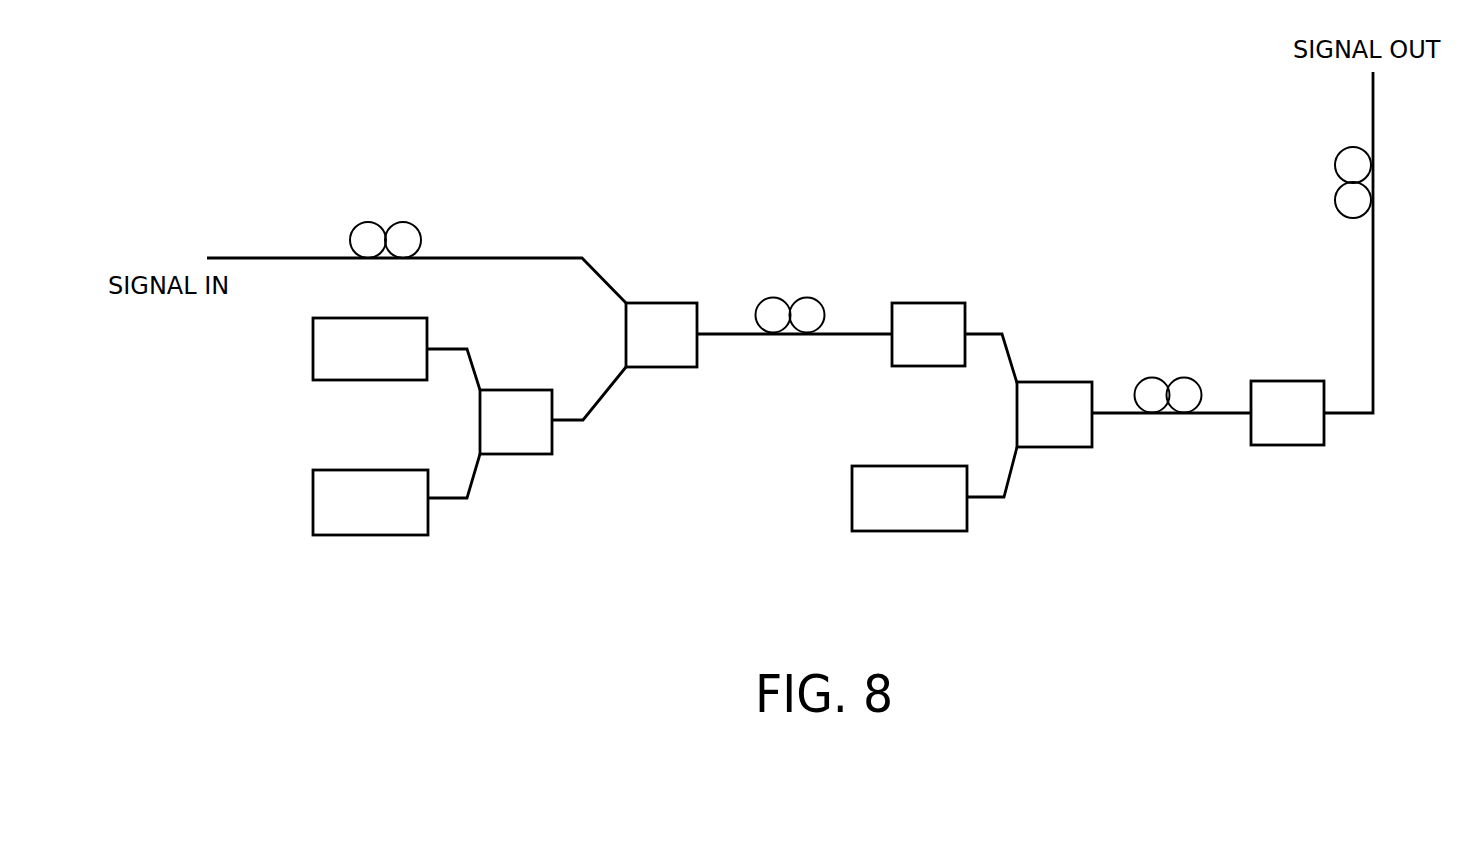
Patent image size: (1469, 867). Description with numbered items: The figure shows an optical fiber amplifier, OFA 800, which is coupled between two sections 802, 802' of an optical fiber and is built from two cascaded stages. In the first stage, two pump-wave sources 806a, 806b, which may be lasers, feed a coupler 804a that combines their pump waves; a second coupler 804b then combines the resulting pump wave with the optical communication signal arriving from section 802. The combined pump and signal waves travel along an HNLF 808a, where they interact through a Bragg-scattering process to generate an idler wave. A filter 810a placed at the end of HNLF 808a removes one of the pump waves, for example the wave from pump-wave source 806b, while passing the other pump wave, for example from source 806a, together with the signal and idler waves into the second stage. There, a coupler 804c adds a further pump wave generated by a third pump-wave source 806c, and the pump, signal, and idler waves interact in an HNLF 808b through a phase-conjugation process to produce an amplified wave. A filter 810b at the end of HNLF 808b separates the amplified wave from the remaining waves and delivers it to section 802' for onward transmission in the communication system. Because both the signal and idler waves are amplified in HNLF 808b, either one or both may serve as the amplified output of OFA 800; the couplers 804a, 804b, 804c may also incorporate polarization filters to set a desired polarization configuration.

The OFA 800 is at (940, 565).
The section of optical fiber 802 is at (416, 247).
The section of optical fiber 802' is at (1396, 242).
The coupler 804a is at (523, 455).
The coupler 804b is at (655, 303).
The coupler 804c is at (1036, 382).
The pump-wave source 806a is at (313, 355).
The pump-wave source 806b is at (313, 512).
The pump-wave source 806c is at (852, 512).
The HNLF 808a is at (855, 333).
The HNLF 808b is at (1223, 414).
The filter 810a is at (920, 303).
The filter 810b is at (1283, 445).